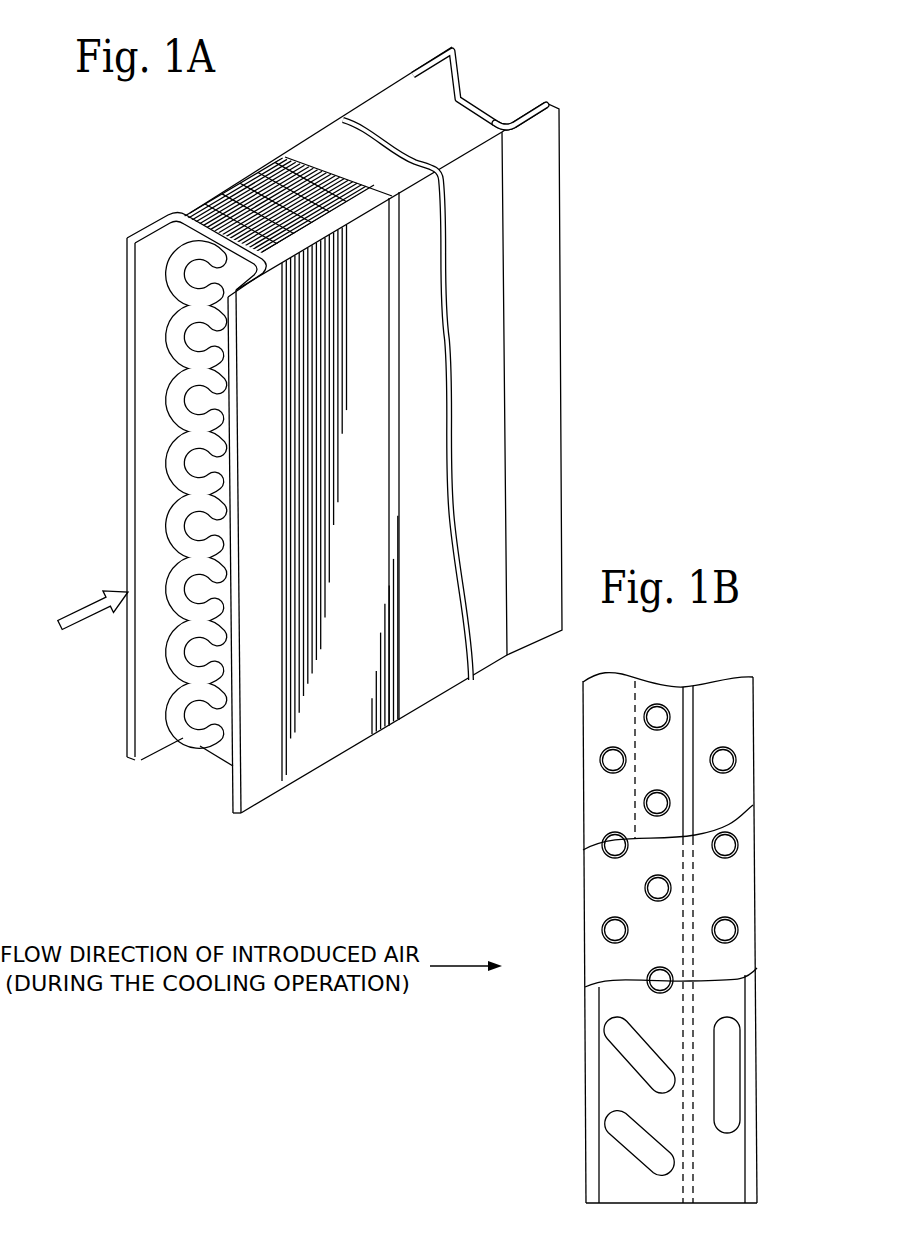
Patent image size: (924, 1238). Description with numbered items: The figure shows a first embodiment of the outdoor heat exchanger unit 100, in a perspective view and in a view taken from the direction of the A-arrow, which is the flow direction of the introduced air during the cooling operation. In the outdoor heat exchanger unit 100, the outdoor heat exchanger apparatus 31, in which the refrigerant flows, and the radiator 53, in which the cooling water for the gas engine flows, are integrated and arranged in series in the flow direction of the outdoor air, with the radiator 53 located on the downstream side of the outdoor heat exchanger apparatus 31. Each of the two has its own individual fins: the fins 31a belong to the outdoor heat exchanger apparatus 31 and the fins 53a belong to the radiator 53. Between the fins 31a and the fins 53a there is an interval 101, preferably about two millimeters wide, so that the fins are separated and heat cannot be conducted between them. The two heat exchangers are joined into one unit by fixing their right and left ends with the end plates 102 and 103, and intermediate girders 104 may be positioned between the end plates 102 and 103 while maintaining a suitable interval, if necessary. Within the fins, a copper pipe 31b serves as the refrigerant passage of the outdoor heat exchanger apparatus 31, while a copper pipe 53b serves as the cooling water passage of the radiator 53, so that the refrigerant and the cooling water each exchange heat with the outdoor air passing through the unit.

In FIG. 1A, the outdoor heat exchanger unit 100 is at (355, 70).
In FIG. 1A, the interval 101 is at (437, 135).
In FIG. 1A, the end plate 103 is at (490, 114).
In FIG. 1A, the intermediate girder 104 is at (313, 147).
In FIG. 1B, the intermediate girder 104 is at (742, 880).
In FIG. 1A, the outdoor heat exchanger apparatus 31 is at (348, 140).
In FIG. 1A, the fins 31a is at (220, 197).
In FIG. 1B, the fins 31a is at (587, 795).
In FIG. 1B, the copper pipe 31b is at (657, 704).
In FIG. 1A, the radiator 53 is at (467, 145).
In FIG. 1A, the fins 53a is at (365, 248).
In FIG. 1B, the fins 53a is at (728, 697).
In FIG. 1B, the copper pipe 53b is at (737, 762).
In FIG. 1A, the end plate 102 is at (225, 748).
In FIG. 1B, the end plate 102 is at (728, 1160).